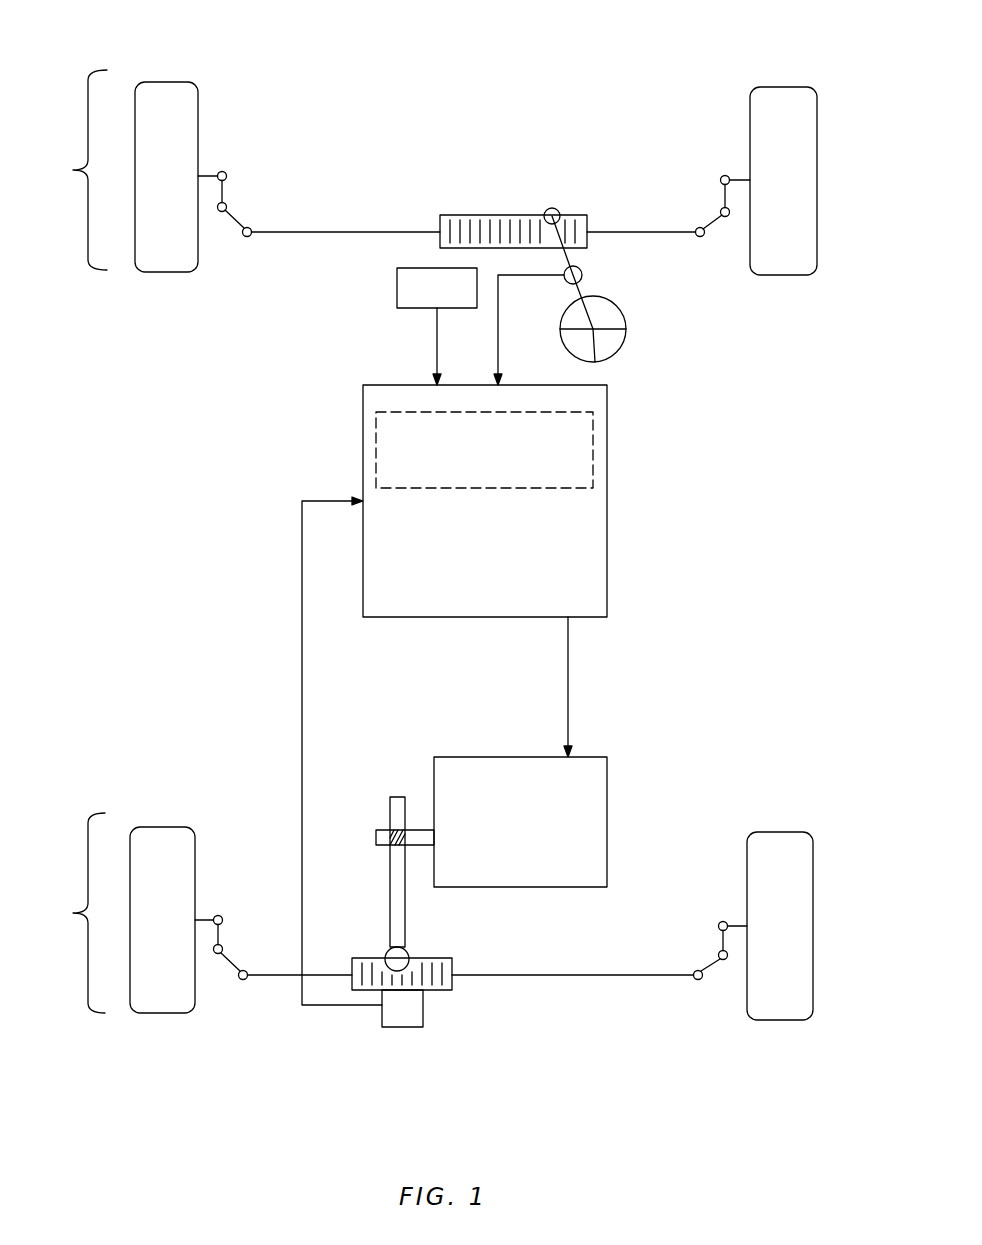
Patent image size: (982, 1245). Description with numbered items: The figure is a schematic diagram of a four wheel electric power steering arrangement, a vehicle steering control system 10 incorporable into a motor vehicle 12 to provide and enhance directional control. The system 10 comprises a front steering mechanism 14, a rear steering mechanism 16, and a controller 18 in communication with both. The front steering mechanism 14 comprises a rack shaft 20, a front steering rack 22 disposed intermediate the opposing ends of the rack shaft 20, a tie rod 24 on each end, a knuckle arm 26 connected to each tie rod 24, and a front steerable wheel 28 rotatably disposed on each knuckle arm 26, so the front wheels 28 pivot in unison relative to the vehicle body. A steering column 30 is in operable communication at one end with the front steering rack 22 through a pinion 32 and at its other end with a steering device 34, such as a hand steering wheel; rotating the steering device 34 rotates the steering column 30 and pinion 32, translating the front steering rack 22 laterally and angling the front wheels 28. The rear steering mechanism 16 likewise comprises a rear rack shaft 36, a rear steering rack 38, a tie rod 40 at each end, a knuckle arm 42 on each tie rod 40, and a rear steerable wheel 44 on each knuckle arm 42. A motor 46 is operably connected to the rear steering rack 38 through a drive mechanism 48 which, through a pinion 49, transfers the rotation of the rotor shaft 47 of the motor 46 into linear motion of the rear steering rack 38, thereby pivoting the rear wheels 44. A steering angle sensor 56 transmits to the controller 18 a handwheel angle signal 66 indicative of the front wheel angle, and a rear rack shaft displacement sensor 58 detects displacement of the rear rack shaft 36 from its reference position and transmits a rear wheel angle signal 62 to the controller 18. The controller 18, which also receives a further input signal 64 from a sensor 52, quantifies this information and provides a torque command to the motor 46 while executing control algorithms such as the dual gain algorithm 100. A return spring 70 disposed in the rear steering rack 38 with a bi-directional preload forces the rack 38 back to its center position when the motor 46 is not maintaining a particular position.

The vehicle steering control system 10 is at (608, 88).
The motor vehicle 12 is at (826, 135).
The front steering mechanism 14 is at (72, 170).
The rear steering mechanism 16 is at (67, 913).
The controller 18 is at (607, 505).
The rack shaft 20 is at (663, 234).
The front steering rack 22 is at (491, 215).
The tie rod 24 is at (238, 218).
The knuckle arm 26 is at (225, 191).
The front steerable wheel 28 is at (163, 273).
The steering column 30 is at (582, 283).
The pinion 32 is at (553, 208).
The steering device 34 is at (623, 350).
The rear rack shaft 36 is at (273, 975).
The rear steering rack 38 is at (438, 992).
The tie rod 40 is at (233, 963).
The knuckle arm 42 is at (222, 937).
The rear steerable wheel 44 is at (167, 1015).
The motor 46 is at (507, 838).
The rotor shaft 47 is at (378, 832).
The drive mechanism 48 is at (390, 872).
The pinion 49 is at (410, 963).
The vehicle speed sensor 52 is at (452, 310).
The steering angle sensor 56 is at (566, 286).
The rear rack shaft displacement sensor 58 is at (400, 1028).
The rear wheel angle signal 62 is at (302, 695).
The speed signal line 64 is at (436, 332).
The handwheel angle signal 66 is at (499, 347).
The return spring 70 is at (435, 970).
The dual gain algorithm 100 is at (537, 488).